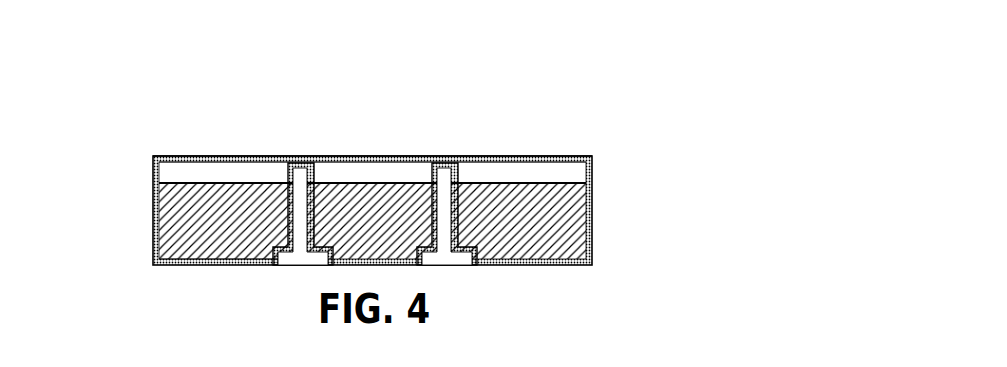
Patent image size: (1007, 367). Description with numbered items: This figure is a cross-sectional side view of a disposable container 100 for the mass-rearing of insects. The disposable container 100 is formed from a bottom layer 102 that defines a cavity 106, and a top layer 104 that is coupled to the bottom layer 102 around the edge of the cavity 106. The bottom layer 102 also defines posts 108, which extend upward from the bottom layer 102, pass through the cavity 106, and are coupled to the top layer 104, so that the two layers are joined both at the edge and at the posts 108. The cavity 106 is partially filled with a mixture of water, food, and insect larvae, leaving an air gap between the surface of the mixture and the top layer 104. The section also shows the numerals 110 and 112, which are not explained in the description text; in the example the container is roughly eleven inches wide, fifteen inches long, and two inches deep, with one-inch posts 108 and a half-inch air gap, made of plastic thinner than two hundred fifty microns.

The disposable container 100 is at (632, 85).
The bottom layer 102 is at (232, 265).
The top layer 104 is at (487, 160).
The cavity 106 is at (222, 208).
The posts 108 is at (317, 172).
The bottom fill material 110 is at (182, 223).
The headspace gap 112 is at (572, 177).